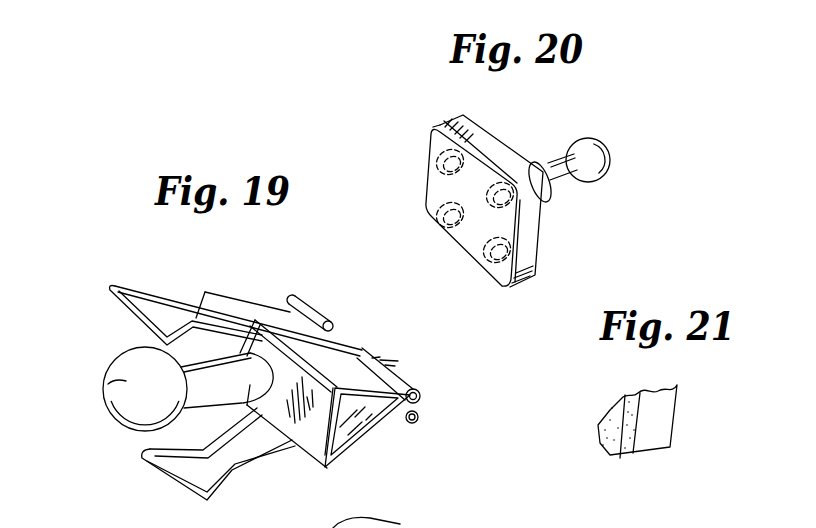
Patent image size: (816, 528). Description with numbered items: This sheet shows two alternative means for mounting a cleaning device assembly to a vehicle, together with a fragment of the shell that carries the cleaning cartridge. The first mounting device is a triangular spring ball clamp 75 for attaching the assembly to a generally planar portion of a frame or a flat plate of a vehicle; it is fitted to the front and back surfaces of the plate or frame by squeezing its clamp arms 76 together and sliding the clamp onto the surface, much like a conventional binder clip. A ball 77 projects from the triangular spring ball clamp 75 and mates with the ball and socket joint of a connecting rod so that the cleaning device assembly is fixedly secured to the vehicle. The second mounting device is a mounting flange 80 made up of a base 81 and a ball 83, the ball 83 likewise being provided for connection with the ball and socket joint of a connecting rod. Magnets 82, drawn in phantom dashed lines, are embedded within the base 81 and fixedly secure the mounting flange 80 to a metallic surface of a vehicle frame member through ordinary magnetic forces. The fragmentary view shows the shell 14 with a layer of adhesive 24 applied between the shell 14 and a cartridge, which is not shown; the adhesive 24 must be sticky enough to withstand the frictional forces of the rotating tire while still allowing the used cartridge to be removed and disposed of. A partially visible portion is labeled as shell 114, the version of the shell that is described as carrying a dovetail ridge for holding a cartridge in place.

In FIG. 19, the triangular spring ball clamp 75 is at (362, 377).
In FIG. 19, the clamp arms 76 is at (112, 285).
In FIG. 19, the ball 77 is at (127, 382).
In FIG. 20, the mounting flange 80 is at (430, 183).
In FIG. 20, the base 81 is at (530, 237).
In FIG. 20, the magnets 82 is at (478, 152).
In FIG. 20, the ball 83 is at (597, 153).
In FIG. 21, the shell 14 is at (670, 445).
In FIG. 21, the adhesive 24 is at (623, 458).
In FIG. 19, the shell 114 is at (401, 520).